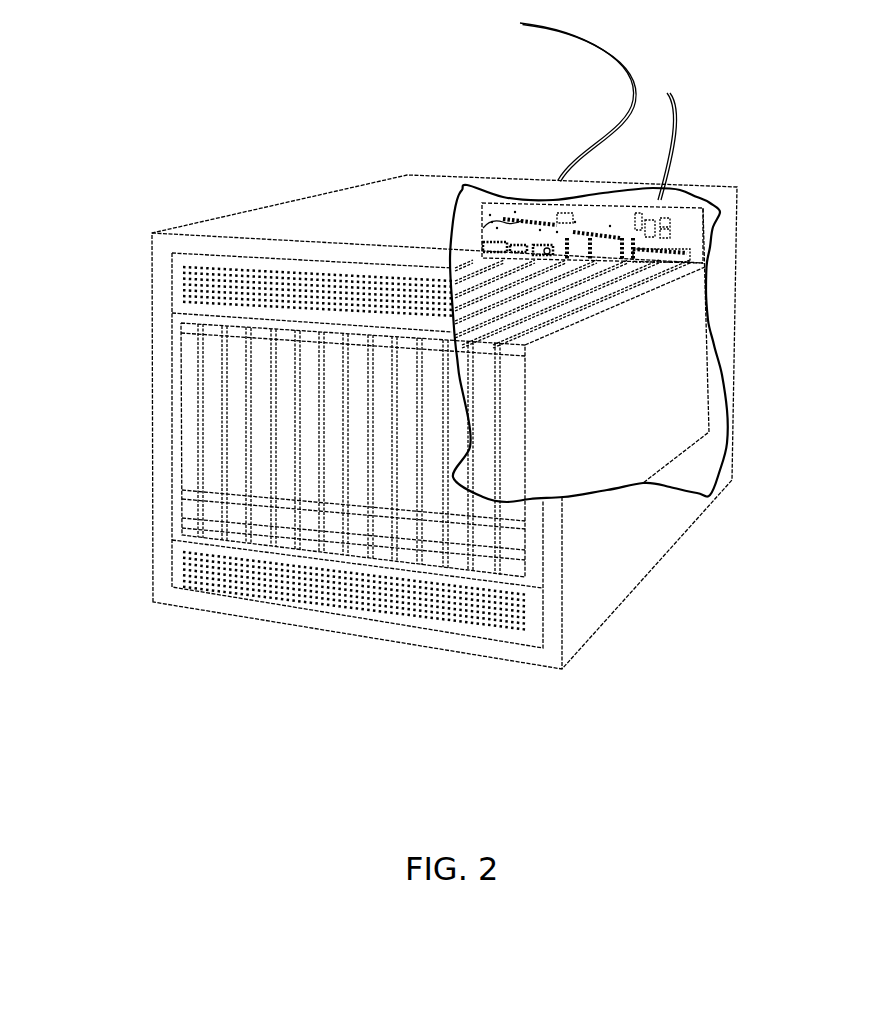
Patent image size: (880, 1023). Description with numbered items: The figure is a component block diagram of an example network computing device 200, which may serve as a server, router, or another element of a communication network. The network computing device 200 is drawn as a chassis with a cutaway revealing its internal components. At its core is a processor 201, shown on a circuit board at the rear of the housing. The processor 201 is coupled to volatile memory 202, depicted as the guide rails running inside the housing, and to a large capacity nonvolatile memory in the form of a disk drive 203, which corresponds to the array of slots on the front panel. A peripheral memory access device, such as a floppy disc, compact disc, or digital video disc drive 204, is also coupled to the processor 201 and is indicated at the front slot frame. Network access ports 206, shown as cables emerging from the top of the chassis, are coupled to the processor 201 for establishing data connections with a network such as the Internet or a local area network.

The network computing device 200 is at (88, 144).
The processor 201 is at (562, 212).
The volatile memory 202 is at (688, 258).
The disk drive 203 is at (237, 381).
The compact disc or digital video disc drive 204 is at (213, 446).
The network access ports 206 is at (605, 43).